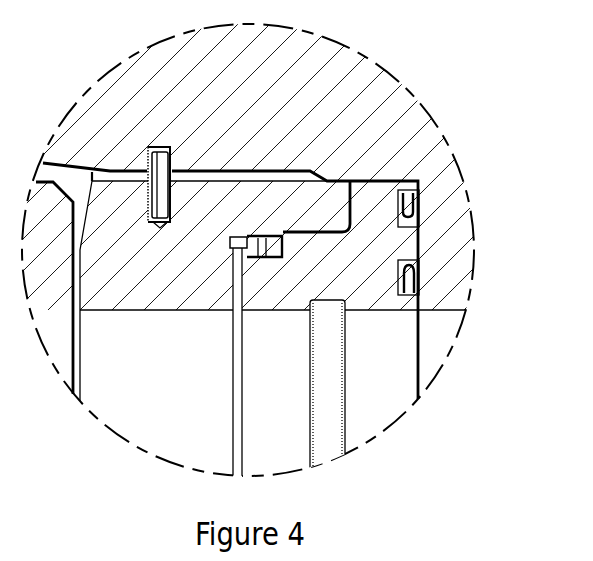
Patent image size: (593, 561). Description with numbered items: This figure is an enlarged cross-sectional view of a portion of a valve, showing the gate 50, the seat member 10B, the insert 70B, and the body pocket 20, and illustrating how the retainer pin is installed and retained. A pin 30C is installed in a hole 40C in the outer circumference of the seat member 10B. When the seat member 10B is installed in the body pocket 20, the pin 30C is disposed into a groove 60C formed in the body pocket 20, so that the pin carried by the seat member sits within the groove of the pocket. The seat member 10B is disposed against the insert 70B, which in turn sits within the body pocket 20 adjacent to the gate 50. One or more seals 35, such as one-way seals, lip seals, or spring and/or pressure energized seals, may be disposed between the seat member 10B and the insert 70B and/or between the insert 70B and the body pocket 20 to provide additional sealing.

The body pocket 20 is at (214, 70).
The gate 50 is at (63, 275).
The seat member 10B is at (199, 283).
The groove 60C is at (148, 146).
The pin 30C is at (162, 164).
The hole 40C is at (170, 195).
The insert 70B is at (354, 283).
The seals 35 is at (258, 250).